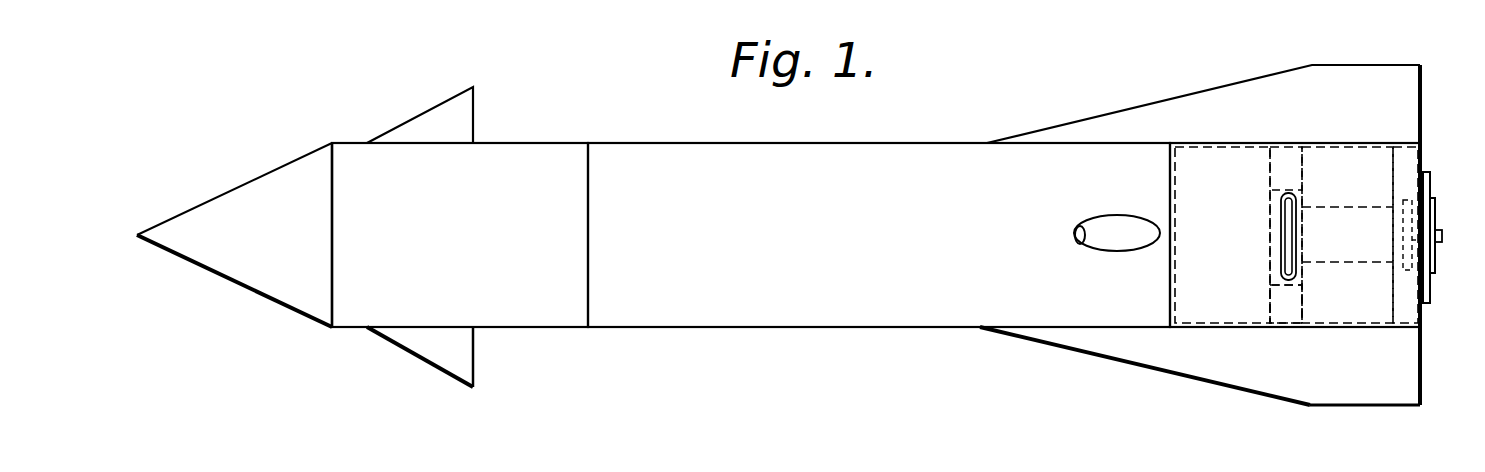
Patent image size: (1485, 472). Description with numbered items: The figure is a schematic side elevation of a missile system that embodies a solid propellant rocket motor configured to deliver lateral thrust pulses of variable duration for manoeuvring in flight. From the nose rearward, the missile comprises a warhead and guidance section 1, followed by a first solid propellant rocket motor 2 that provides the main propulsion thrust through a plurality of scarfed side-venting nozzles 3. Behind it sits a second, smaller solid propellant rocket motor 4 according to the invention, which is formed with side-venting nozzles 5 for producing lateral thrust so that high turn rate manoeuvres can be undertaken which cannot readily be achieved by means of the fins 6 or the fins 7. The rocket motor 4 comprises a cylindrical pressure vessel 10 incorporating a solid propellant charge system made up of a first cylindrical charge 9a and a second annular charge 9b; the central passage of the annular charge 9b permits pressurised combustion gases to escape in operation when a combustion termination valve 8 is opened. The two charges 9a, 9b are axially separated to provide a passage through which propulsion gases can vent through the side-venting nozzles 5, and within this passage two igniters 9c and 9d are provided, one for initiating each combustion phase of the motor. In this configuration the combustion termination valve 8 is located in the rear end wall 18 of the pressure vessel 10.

The warhead and guidance section 1 is at (386, 243).
The first solid propellant rocket motor 2 is at (806, 243).
The scarfed side-venting nozzles 3 is at (1101, 243).
The second solid propellant rocket motor 4 is at (1225, 329).
The side-venting nozzles 5 is at (1282, 222).
The fins 6 is at (457, 121).
The fins 7 is at (1166, 106).
The combustion termination valve 8 is at (1436, 217).
The first cylindrical charge 9a is at (1197, 180).
The second annular charge 9b is at (1340, 175).
The igniter 9c is at (1285, 160).
The igniter 9d is at (1287, 300).
The cylindrical pressure vessel 10 is at (1407, 331).
The rear end wall 18 is at (1425, 158).